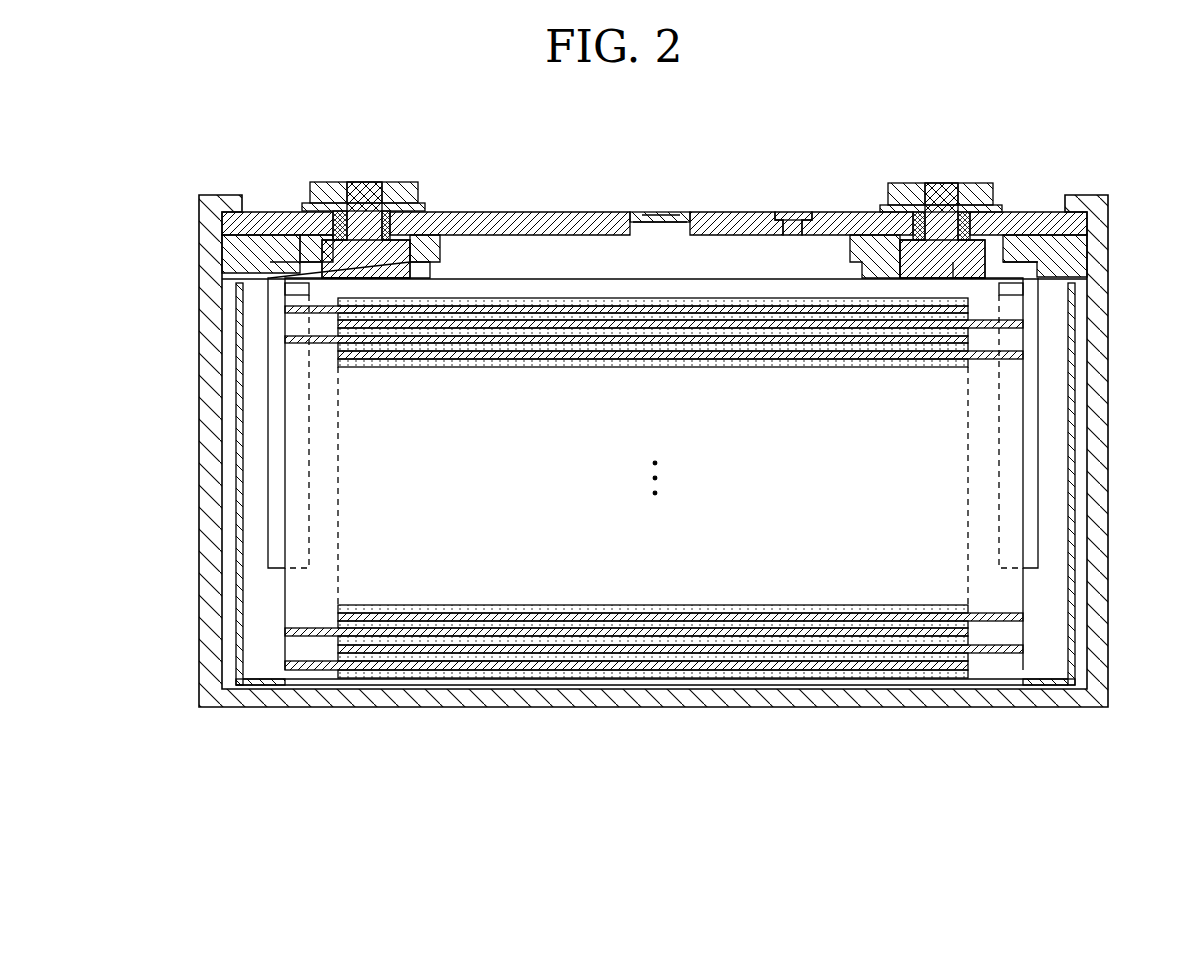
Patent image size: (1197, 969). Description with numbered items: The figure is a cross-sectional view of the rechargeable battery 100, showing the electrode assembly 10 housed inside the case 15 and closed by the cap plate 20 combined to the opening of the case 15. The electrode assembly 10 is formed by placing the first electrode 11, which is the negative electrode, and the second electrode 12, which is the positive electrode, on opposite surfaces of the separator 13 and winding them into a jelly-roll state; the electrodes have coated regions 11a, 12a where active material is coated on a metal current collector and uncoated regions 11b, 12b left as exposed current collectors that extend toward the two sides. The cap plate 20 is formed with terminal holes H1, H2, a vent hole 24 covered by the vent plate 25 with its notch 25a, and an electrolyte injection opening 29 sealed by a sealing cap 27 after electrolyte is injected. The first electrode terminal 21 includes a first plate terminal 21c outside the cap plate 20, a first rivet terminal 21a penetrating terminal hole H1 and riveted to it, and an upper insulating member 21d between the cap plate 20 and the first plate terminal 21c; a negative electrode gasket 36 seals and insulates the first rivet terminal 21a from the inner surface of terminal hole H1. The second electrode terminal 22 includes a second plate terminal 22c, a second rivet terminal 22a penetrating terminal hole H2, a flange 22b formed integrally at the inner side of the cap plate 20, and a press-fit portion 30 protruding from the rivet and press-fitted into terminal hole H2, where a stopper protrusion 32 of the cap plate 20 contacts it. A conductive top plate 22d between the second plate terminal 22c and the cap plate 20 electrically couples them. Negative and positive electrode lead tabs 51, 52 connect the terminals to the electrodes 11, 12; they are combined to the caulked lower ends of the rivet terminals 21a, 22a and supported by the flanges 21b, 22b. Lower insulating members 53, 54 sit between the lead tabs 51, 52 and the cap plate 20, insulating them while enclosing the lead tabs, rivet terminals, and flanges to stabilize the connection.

The rechargeable battery 100 is at (578, 109).
The electrode assembly 10 is at (784, 692).
The first electrode 11 is at (546, 554).
The coated region 11a is at (653, 534).
The uncoated region 11b is at (290, 309).
The second electrode 12 is at (685, 561).
The coated region 12a is at (890, 655).
The uncoated region 12b is at (1000, 541).
The separator 13 is at (515, 297).
The case 15 is at (1100, 441).
The cap plate 20 is at (729, 228).
The first electrode terminal 21 is at (378, 180).
The first rivet terminal 21a is at (363, 279).
The flange 21b is at (400, 279).
The first plate terminal 21c is at (400, 188).
The upper insulating member 21d is at (302, 207).
The second electrode terminal 22 is at (938, 180).
The second rivet terminal 22a is at (960, 276).
The flange 22b is at (912, 279).
The second plate terminal 22c is at (985, 189).
The conductive top plate 22d is at (885, 210).
The vent hole 24 is at (657, 234).
The vent plate 25 is at (686, 221).
The notch 25a is at (660, 213).
The sealing cap 27 is at (796, 213).
The electrolyte injection opening 29 is at (789, 220).
The press-fit portion 30 is at (919, 212).
The stopper protrusion 32 is at (905, 242).
The negative electrode gasket 36 is at (335, 222).
The negative electrode lead tab 51 is at (260, 419).
The positive electrode lead tab 52 is at (1047, 530).
The lower insulating member 53 is at (240, 251).
The lower insulating member 54 is at (1065, 256).
The terminal hole H1 is at (350, 200).
The terminal hole H2 is at (975, 214).